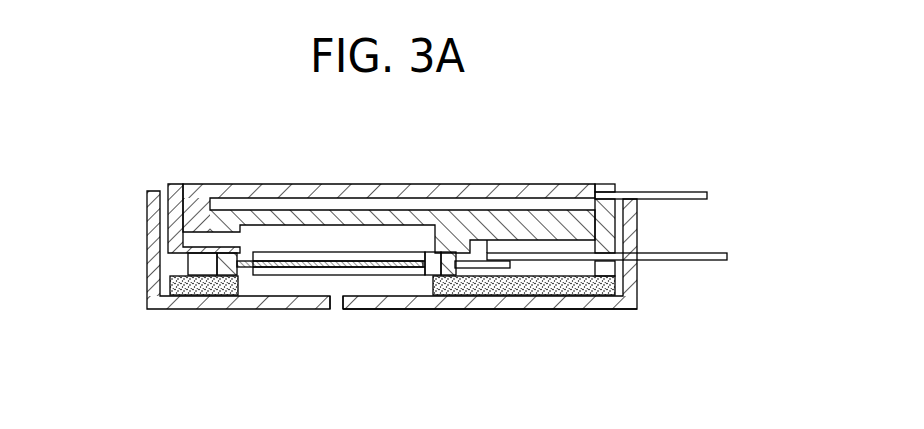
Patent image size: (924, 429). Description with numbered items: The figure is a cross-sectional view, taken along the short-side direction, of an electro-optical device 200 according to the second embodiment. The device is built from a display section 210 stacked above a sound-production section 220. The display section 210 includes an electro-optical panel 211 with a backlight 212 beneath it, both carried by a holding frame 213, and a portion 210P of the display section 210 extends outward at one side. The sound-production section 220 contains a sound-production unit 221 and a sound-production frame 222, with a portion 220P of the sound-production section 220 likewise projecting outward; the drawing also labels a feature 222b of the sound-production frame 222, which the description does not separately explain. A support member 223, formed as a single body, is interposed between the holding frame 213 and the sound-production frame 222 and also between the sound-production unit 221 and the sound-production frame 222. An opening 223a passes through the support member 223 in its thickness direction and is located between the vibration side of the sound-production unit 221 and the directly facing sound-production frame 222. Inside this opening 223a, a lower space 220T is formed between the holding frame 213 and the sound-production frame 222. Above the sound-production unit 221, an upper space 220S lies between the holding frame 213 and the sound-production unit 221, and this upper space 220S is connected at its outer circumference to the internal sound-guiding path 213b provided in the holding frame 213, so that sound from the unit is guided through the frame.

The electro-optical device 200 is at (714, 85).
The display section 210 is at (521, 177).
The upper frame protrusion 210P is at (690, 192).
The electro-optical panel 211 is at (326, 184).
The backlight 212 is at (360, 205).
The holding frame 213 is at (177, 184).
The internal sound-guiding path 213b is at (193, 184).
The sound-production section 220 is at (509, 322).
The lower frame protrusion 220P is at (707, 261).
The upper space 220S is at (397, 243).
The lower space 220T is at (252, 283).
The sound-production unit 221 is at (370, 276).
The sound-production frame 222 is at (147, 262).
The opening 222b is at (342, 297).
The support member 223 is at (613, 310).
The opening 223a is at (426, 273).